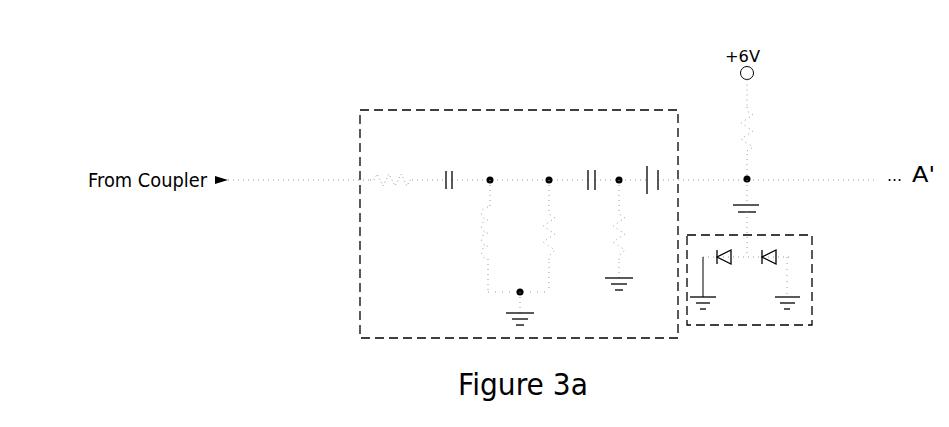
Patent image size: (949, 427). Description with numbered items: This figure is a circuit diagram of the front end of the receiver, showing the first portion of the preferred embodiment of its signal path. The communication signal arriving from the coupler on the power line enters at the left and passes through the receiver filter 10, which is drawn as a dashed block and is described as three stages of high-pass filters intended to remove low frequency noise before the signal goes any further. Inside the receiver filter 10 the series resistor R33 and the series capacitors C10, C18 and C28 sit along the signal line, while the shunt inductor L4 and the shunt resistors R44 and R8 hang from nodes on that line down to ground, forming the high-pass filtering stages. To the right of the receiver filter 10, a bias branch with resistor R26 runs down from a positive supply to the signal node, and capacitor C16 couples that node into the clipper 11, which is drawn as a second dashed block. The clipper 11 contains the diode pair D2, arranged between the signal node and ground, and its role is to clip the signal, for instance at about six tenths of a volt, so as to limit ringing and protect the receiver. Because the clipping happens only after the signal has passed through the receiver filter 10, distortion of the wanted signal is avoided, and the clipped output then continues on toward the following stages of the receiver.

The receiver filter 10 is at (519, 199).
The clipper 11 is at (765, 280).
The resistor R33 is at (391, 194).
The capacitor C10 is at (459, 163).
The capacitor C18 is at (587, 167).
The capacitor C28 is at (650, 169).
The inductor L4 is at (501, 236).
The resistor R44 is at (570, 236).
The resistor R8 is at (631, 235).
The resistor R26 is at (768, 130).
The capacitor C16 is at (767, 218).
The diode D2 is at (746, 270).